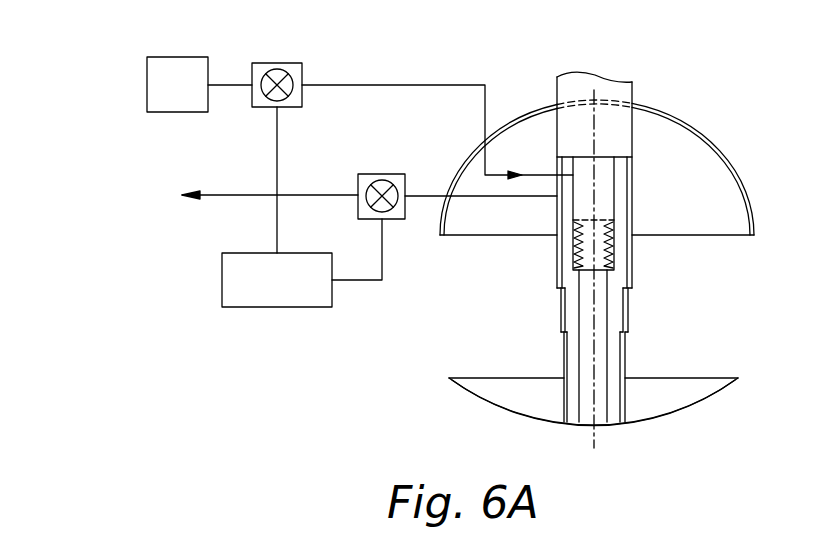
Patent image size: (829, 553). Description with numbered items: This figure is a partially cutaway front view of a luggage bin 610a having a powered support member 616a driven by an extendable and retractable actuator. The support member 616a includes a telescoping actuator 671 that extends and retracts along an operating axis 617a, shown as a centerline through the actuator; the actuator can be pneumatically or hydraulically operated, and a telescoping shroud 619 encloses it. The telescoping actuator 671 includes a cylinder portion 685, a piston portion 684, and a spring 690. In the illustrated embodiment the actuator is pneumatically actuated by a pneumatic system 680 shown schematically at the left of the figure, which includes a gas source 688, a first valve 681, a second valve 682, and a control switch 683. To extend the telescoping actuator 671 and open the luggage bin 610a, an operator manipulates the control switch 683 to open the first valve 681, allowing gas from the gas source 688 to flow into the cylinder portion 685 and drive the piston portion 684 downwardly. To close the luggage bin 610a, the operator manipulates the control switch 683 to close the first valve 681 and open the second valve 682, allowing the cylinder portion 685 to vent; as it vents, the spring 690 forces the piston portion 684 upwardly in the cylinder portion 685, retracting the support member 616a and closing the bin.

The pneumatic system 680 is at (131, 214).
The gas source 688 is at (165, 57).
The first valve 681 is at (291, 63).
The second valve 682 is at (376, 174).
The control switch 683 is at (252, 308).
The telescoping actuator 671 is at (617, 188).
The luggage bin 610a is at (388, 384).
The cylinder portion 685 is at (605, 178).
The piston portion 684 is at (605, 212).
The spring 690 is at (570, 250).
The support member 616a is at (627, 318).
The telescoping shroud 619 is at (623, 360).
The operating axis 617a is at (597, 442).